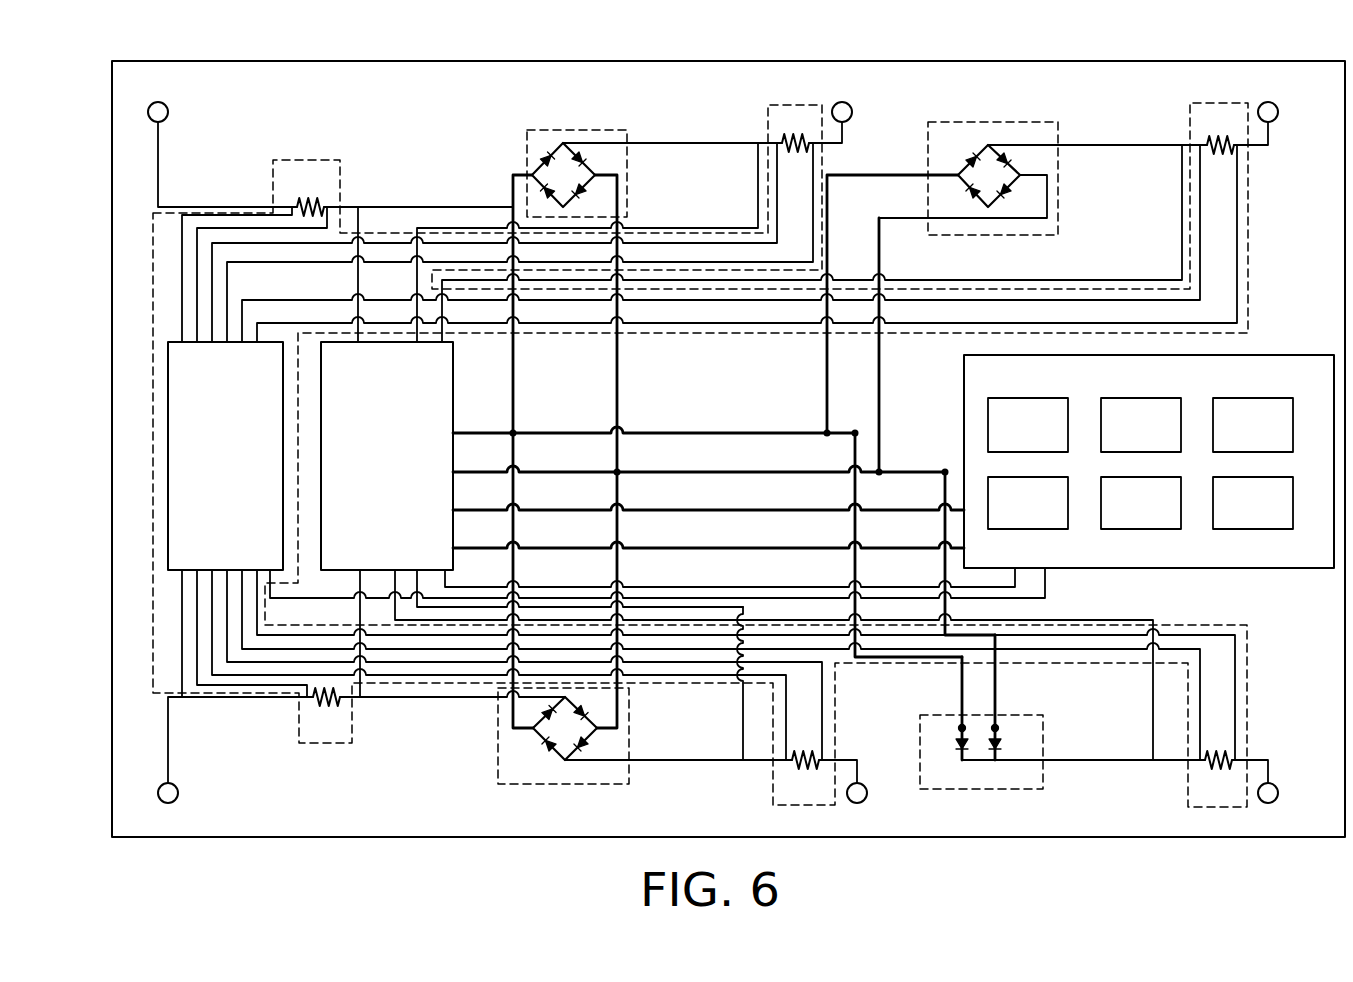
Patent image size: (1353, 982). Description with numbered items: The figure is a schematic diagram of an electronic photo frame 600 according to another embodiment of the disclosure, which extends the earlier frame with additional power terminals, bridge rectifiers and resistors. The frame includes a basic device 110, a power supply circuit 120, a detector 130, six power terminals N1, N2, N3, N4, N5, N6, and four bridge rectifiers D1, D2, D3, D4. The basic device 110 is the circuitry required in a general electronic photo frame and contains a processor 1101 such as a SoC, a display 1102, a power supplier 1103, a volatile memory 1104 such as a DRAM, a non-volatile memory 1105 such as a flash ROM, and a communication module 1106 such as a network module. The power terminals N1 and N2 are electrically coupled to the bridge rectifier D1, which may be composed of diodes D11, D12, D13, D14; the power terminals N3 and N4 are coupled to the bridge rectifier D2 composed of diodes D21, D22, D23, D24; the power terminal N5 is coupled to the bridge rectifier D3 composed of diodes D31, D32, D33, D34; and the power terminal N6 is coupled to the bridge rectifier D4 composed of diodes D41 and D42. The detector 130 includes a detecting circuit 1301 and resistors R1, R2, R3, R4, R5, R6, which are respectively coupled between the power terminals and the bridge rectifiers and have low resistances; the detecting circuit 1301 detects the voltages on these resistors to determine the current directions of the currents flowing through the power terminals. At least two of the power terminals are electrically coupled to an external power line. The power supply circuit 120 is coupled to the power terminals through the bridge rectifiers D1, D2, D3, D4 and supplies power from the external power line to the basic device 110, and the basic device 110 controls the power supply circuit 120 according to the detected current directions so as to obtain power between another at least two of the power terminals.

The electronic photo frame 600 is at (1229, 61).
The detector 130 is at (152, 296).
The detecting circuit 1301 is at (167, 454).
The power supply circuit 120 is at (453, 412).
The basic device 110 is at (1262, 355).
The processor 1101 is at (1010, 398).
The display 1102 is at (1124, 398).
The power supplier 1103 is at (1237, 398).
The volatile memory 1104 is at (1010, 529).
The non-volatile memory 1105 is at (1124, 529).
The communication module 1106 is at (1237, 529).
The power terminal N1 is at (222, 153).
The power terminal N2 is at (848, 121).
The power terminal N3 is at (235, 751).
The power terminal N4 is at (861, 783).
The power terminal N5 is at (1274, 122).
The power terminal N6 is at (1273, 783).
The resistor R1 is at (310, 191).
The resistor R2 is at (795, 128).
The resistor R3 is at (326, 712).
The resistor R4 is at (805, 777).
The resistor R5 is at (1220, 129).
The resistor R6 is at (1218, 778).
The bridge rectifier D1 is at (583, 150).
The bridge rectifier D2 is at (574, 756).
The bridge rectifier D3 is at (1012, 154).
The bridge rectifier D4 is at (1019, 734).
The diode D11 is at (532, 150).
The diode D12 is at (599, 158).
The diode D13 is at (527, 193).
The diode D14 is at (594, 201).
The diode D21 is at (529, 712).
The diode D22 is at (600, 706).
The diode D23 is at (600, 748).
The diode D24 is at (540, 758).
The diode D31 is at (957, 150).
The diode D32 is at (1024, 158).
The diode D33 is at (957, 200).
The diode D34 is at (1020, 200).
The diode D41 is at (944, 712).
The diode D42 is at (1014, 697).